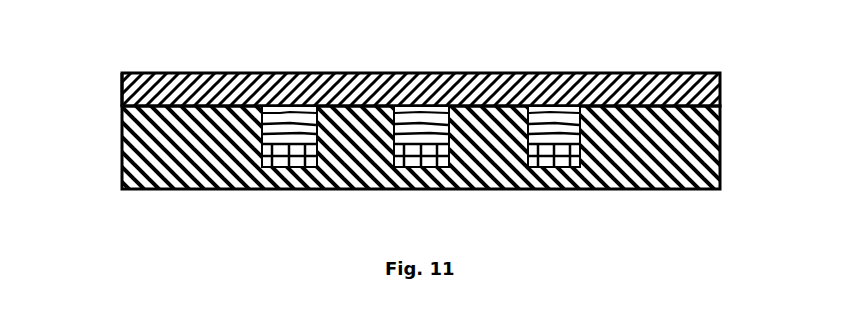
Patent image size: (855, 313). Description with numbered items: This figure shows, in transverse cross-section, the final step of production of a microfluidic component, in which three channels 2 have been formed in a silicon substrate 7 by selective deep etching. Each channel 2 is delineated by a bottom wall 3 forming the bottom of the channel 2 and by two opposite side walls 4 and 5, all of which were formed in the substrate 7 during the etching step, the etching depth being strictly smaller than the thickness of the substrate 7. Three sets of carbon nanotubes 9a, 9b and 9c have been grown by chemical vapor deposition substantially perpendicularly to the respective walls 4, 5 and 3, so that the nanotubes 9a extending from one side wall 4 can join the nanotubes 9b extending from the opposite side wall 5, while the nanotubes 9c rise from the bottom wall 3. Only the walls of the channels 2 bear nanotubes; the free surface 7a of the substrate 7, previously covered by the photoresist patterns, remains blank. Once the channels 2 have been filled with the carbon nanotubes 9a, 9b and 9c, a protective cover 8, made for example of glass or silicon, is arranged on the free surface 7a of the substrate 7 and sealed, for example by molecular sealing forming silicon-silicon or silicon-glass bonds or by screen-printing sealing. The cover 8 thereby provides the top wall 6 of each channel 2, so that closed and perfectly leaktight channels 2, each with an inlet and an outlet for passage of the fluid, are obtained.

The channel 2 is at (430, 118).
The bottom wall 3 is at (563, 173).
The side wall 4 is at (528, 106).
The side wall 5 is at (558, 106).
The top wall 6 is at (553, 108).
The substrate 7 is at (678, 148).
The free surface 7a is at (122, 90).
The protective cover 8 is at (640, 73).
The carbon nanotubes 9a is at (290, 110).
The carbon nanotubes 9b is at (298, 105).
The carbon nanotubes 9c is at (293, 164).